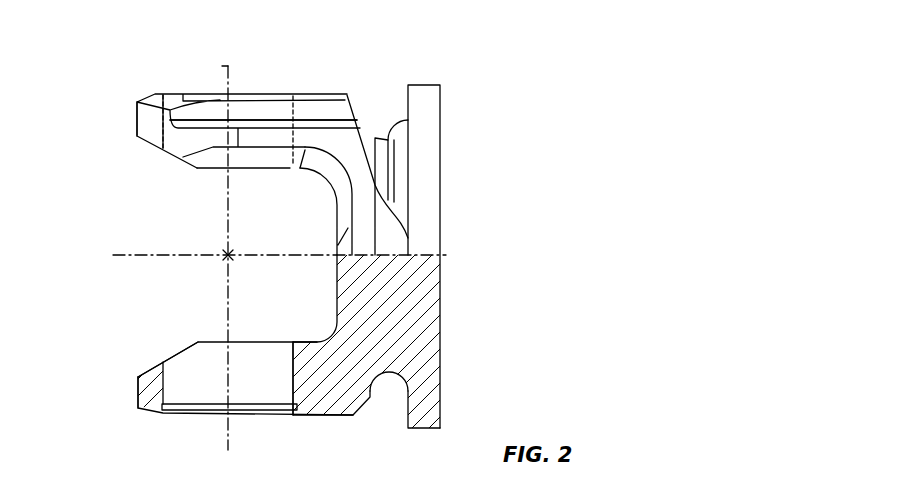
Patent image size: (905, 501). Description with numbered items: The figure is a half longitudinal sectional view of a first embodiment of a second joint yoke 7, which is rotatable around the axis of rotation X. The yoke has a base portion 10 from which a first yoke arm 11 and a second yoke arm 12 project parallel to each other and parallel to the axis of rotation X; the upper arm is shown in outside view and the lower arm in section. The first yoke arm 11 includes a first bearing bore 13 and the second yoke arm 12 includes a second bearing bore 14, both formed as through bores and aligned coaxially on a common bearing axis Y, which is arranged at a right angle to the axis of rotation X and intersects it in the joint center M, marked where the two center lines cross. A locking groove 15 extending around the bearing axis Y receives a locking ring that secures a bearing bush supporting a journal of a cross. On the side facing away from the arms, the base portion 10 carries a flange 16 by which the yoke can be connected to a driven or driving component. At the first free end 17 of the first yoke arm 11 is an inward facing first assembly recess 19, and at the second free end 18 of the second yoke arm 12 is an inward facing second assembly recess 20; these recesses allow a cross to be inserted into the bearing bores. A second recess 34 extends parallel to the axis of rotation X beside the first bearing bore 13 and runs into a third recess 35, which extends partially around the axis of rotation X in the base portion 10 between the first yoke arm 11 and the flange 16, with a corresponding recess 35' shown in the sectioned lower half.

The second joint yoke 7 is at (489, 124).
The base portion 10 is at (395, 247).
The first yoke arm 11 is at (277, 80).
The second yoke arm 12 is at (283, 440).
The first bearing bore 13 is at (293, 162).
The second bearing bore 14 is at (293, 362).
The locking groove 15 is at (163, 410).
The flange 16 is at (423, 183).
The first free end 17 is at (135, 120).
The second free end 18 is at (137, 392).
The first assembly recess 19 is at (150, 143).
The second assembly recess 20 is at (148, 368).
The second recess 34 is at (317, 118).
The third recess 35 is at (384, 129).
The recess 35' is at (384, 420).
The axis of rotation X is at (127, 255).
The bearing axis Y is at (228, 297).
The joint center M is at (229, 254).